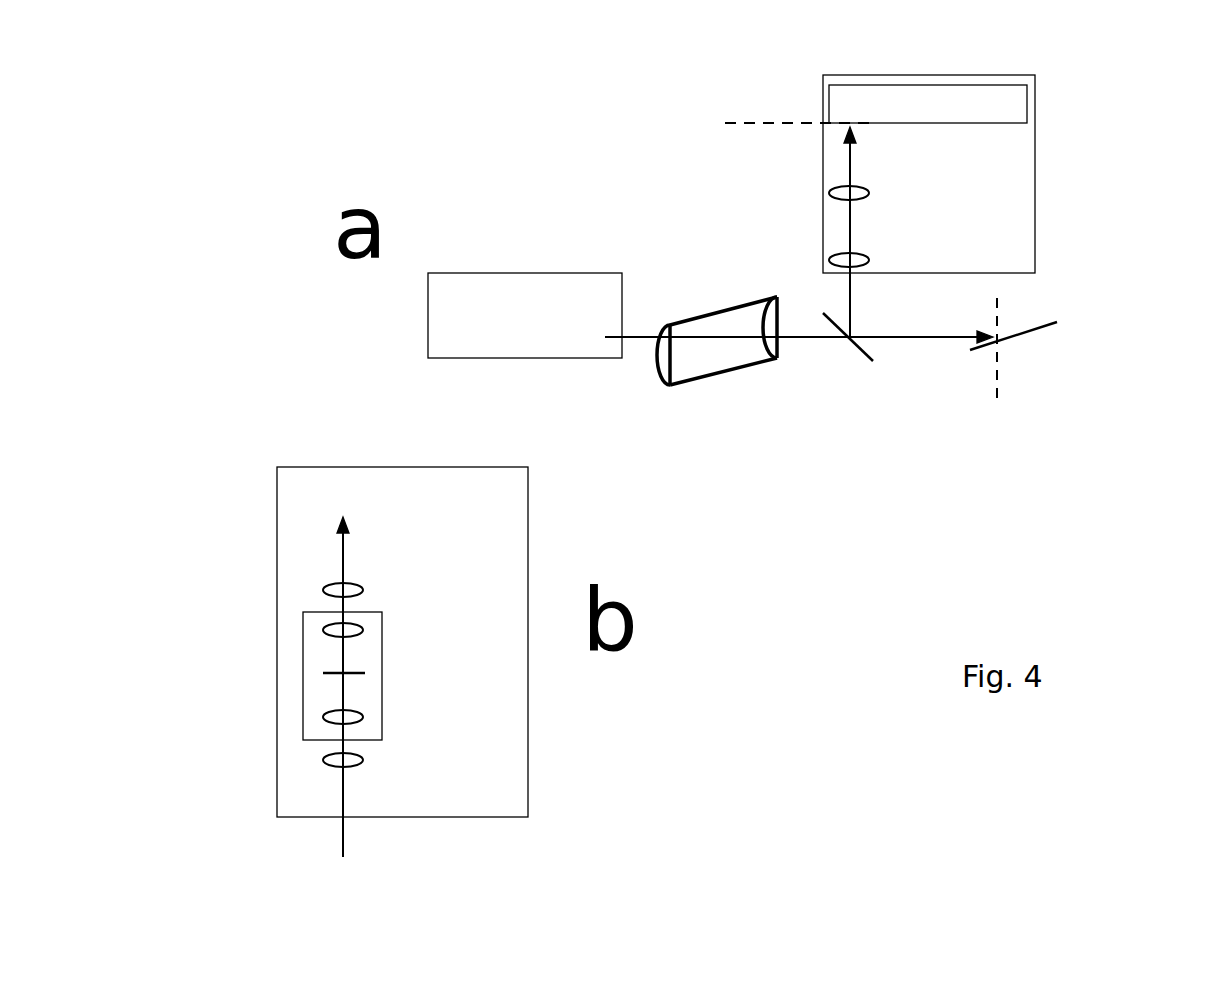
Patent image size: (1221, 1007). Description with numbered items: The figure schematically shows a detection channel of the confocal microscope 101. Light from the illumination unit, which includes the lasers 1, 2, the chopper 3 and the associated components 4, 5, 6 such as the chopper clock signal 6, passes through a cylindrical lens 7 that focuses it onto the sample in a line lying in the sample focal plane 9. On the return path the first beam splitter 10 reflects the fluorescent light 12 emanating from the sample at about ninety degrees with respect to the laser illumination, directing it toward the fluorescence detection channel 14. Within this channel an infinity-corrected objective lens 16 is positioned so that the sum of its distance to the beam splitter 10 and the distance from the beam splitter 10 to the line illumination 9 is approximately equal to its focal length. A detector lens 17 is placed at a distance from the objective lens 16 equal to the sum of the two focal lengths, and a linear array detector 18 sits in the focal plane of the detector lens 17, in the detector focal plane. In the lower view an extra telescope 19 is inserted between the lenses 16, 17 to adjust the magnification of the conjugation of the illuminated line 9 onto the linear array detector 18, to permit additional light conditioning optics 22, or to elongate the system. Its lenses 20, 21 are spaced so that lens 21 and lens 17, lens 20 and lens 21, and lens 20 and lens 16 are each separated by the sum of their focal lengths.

In FIG. 4a, the confocal microscope 101 is at (582, 143).
In FIG. 4a, the laser 1 is at (525, 263).
In FIG. 4a, the laser 2 is at (525, 263).
In FIG. 4a, the chopper 3 is at (525, 263).
In FIG. 4a, the light source 4 is at (525, 263).
In FIG. 4a, the light source 5 is at (525, 263).
In FIG. 4a, the chopper clock signal 6 is at (525, 270).
In FIG. 4a, the cylindrical lens 7 is at (728, 375).
In FIG. 4a, the sample focal plane line illumination 9 is at (1057, 310).
In FIG. 4a, the first beam splitter 10 is at (873, 366).
In FIG. 4a, the fluorescent light 12 is at (838, 297).
In FIG. 4a, the fluorescence detection channel 14 is at (1040, 97).
In FIG. 4b, the fluorescence detection channel 14 is at (533, 522).
In FIG. 4a, the infinity-corrected objective lens 16 is at (870, 260).
In FIG. 4b, the infinity-corrected objective lens 16 is at (365, 760).
In FIG. 4a, the detector lens 17 is at (870, 193).
In FIG. 4b, the detector lens 17 is at (365, 590).
In FIG. 4a, the linear array detector 18 is at (993, 123).
In FIG. 4b, the telescope 19 is at (297, 673).
In FIG. 4b, the lens 20 is at (365, 717).
In FIG. 4b, the lens 21 is at (365, 630).
In FIG. 4b, the light conditioning optics 22 is at (372, 672).